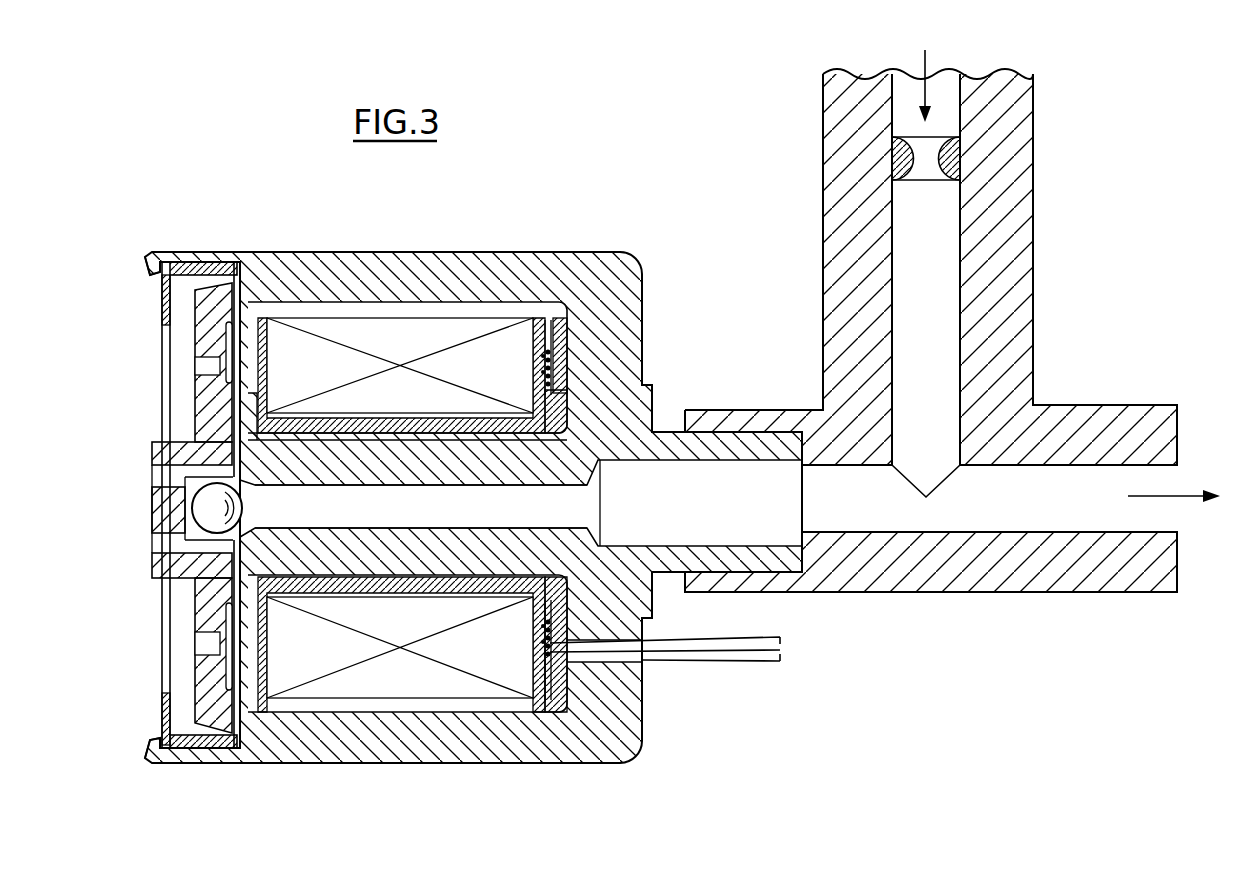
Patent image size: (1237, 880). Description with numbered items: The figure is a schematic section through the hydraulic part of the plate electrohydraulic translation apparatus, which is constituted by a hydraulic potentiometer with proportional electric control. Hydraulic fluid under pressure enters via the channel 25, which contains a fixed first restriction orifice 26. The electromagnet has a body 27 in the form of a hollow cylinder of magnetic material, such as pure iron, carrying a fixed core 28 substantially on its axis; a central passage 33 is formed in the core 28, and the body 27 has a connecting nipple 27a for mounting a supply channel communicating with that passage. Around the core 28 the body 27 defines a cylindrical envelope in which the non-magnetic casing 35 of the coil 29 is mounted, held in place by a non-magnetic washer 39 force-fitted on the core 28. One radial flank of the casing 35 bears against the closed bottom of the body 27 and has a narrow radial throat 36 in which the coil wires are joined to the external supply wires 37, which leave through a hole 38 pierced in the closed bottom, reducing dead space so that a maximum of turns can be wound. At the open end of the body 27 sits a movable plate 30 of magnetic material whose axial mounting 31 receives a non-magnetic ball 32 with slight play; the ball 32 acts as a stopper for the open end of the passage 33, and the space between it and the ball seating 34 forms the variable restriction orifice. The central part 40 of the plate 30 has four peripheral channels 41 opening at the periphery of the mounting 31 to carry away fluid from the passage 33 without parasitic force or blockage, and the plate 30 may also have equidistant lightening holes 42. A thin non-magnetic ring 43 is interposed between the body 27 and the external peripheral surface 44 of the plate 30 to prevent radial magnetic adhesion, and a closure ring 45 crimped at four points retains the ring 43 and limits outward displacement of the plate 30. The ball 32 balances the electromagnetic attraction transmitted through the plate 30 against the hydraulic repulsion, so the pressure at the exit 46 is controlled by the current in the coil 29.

The channel 25 is at (947, 112).
The first restriction orifice 26 is at (925, 147).
The body 27 is at (385, 253).
The connecting nipple 27a is at (730, 447).
The fixed core 28 is at (436, 460).
The coil 29 is at (345, 335).
The plate 30 is at (210, 412).
The mounting 31 is at (163, 547).
The ball 32 is at (203, 505).
The central passage 33 is at (480, 507).
The ball seating 34 is at (197, 578).
The casing 35 is at (553, 405).
The radial throat 36 is at (548, 320).
The external supply wires 37 is at (715, 655).
The hole 38 is at (613, 663).
The washer 39 is at (243, 300).
The central part 40 is at (160, 452).
The peripheral channels 41 is at (160, 475).
The equidistant holes 42 is at (212, 366).
The non-magnetic ring 43 is at (174, 270).
The external peripheral surface 44 is at (206, 268).
The closure ring 45 is at (162, 300).
The exit 46 is at (1089, 493).